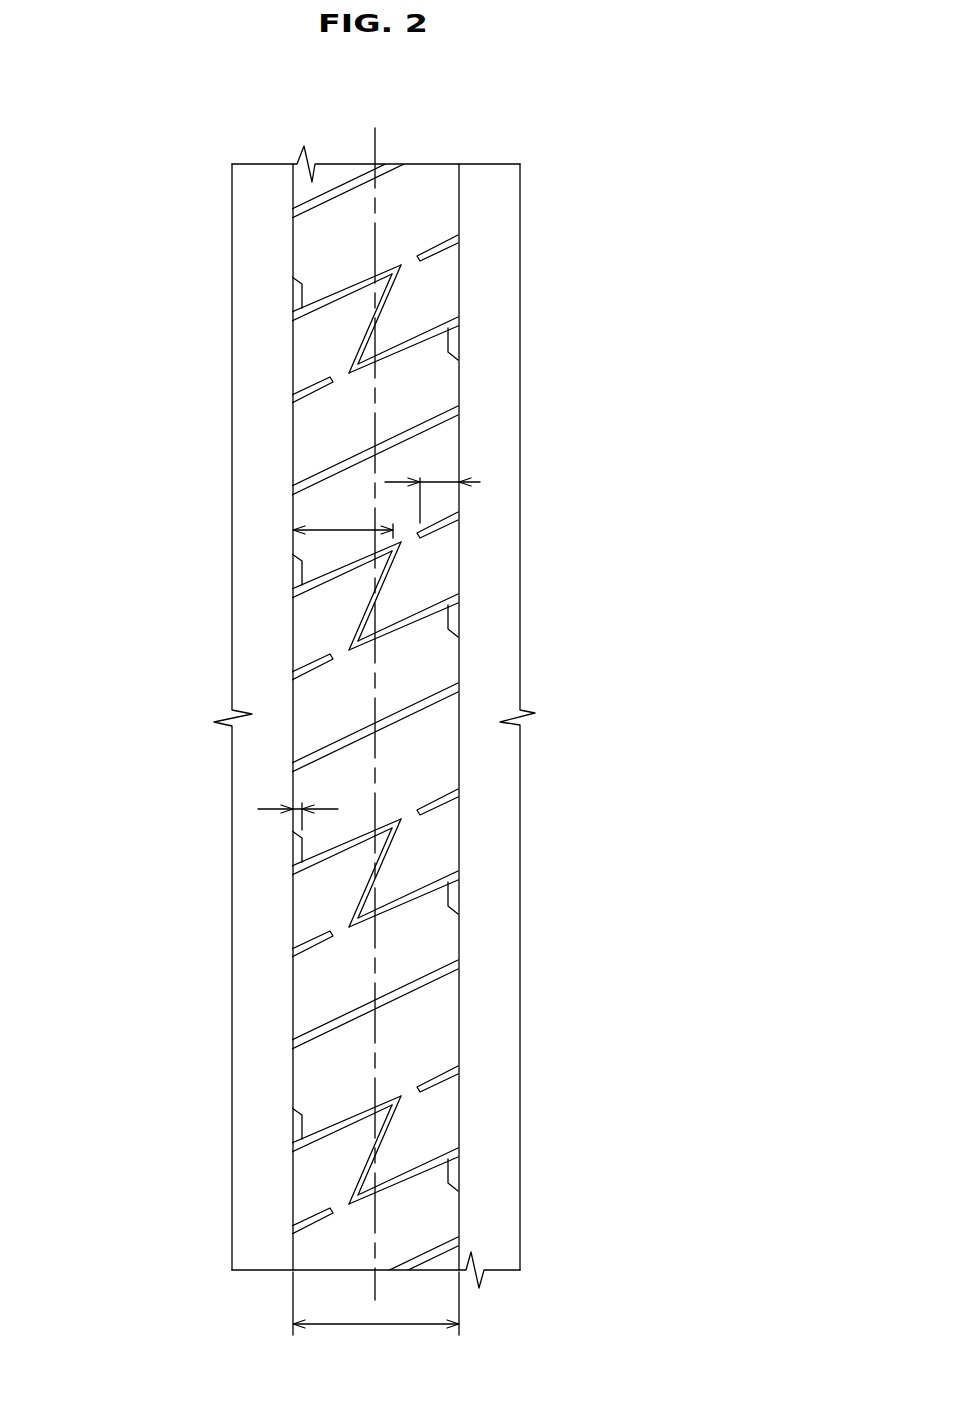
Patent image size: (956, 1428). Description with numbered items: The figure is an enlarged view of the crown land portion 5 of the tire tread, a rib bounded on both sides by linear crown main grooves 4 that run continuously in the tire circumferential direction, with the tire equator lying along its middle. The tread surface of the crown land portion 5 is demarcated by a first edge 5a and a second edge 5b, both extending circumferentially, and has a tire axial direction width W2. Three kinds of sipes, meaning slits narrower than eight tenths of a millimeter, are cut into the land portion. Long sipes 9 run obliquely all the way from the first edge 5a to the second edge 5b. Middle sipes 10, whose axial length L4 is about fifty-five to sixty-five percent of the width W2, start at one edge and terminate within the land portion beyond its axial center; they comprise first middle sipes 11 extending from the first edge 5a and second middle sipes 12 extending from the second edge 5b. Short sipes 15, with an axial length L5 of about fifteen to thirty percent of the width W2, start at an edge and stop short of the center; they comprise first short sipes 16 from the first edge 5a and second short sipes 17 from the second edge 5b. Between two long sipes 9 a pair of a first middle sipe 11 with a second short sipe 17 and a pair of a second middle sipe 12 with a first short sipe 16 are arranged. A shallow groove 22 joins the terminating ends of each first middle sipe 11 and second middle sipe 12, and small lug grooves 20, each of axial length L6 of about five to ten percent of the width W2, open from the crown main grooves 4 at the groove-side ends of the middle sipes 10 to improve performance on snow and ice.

The crown main groove 4 is at (262, 200).
The crown land portion 5 is at (414, 212).
The first edge 5a is at (293, 250).
The second edge 5b is at (459, 260).
The long sipe 9 is at (415, 436).
The middle sipe 10 is at (394, 746).
The first middle sipe 11 is at (343, 298).
The second middle sipe 12 is at (413, 336).
The short sipe 15 is at (354, 734).
The first short sipe 16 is at (312, 392).
The second short sipe 17 is at (443, 522).
The lug groove 20 is at (296, 556).
The shallow groove 22 is at (378, 582).
The tire axial direction length of middle sipe L4 is at (340, 529).
The tire axial direction length of short sipe L5 is at (440, 481).
The tire axial direction length of lug groove L6 is at (292, 803).
The tire axial direction width of crown land portion W2 is at (376, 1315).